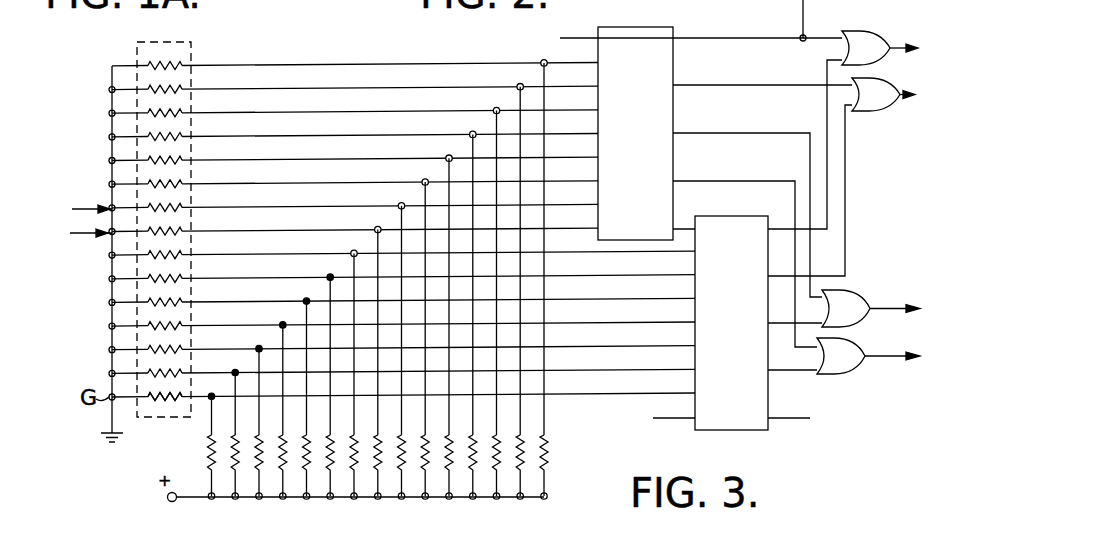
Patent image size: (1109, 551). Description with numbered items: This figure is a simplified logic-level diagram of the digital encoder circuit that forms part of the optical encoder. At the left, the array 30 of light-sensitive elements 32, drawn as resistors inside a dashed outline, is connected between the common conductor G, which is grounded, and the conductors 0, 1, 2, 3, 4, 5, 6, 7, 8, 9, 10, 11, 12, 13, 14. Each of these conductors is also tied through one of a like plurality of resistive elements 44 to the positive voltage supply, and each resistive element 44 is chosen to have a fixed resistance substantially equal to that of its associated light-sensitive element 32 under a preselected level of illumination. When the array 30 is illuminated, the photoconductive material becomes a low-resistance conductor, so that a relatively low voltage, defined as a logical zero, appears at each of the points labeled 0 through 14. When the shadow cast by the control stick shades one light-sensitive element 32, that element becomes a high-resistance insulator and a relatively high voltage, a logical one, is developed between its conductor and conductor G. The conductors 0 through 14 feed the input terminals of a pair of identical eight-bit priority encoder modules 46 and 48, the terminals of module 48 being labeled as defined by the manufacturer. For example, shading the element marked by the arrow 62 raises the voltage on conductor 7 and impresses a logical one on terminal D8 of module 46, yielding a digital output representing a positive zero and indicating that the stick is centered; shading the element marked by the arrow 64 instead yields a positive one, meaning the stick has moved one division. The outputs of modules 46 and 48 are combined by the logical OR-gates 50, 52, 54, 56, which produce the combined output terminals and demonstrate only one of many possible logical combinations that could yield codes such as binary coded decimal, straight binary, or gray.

The conductor 0 is at (402, 388).
The conductor 1 is at (402, 364).
The conductor 2 is at (402, 340).
The conductor 3 is at (402, 317).
The conductor 4 is at (402, 293).
The conductor 5 is at (402, 269).
The conductor 6 is at (402, 245).
The conductor 7 is at (353, 222).
The conductor 8 is at (353, 198).
The conductor 9 is at (353, 174).
The conductor 10 is at (353, 150).
The conductor 11 is at (353, 127).
The conductor 12 is at (353, 103).
The conductor 13 is at (353, 79).
The conductor 14 is at (355, 55).
The array of light-sensitive elements 30 is at (193, 43).
The light-sensitive element 32 is at (161, 403).
The resistive element 44 is at (548, 456).
The priority encoder module 46 is at (673, 60).
The priority encoder module 48 is at (770, 430).
The OR-gate 50 is at (852, 374).
The OR-gate 52 is at (857, 291).
The OR-gate 54 is at (890, 110).
The OR-gate 56 is at (880, 32).
The arrow 62 is at (84, 236).
The arrow 64 is at (80, 207).